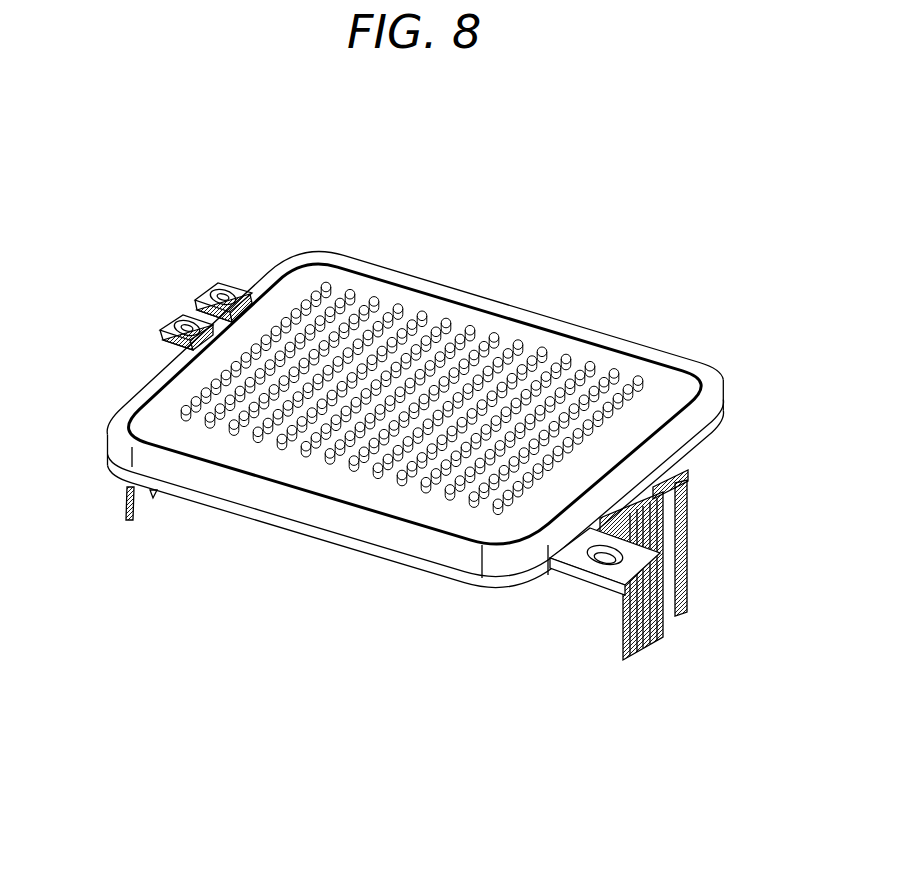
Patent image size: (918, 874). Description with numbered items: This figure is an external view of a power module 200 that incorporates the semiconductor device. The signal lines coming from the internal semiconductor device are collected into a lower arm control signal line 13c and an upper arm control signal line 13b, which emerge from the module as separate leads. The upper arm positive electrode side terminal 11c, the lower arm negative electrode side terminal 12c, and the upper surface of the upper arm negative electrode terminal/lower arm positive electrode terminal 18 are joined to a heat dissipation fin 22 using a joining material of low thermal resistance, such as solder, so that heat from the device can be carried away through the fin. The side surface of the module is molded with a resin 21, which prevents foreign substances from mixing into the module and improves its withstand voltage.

The power module 200 is at (502, 228).
The heat dissipation fin 22 is at (643, 356).
The resin 21 is at (415, 425).
The lower arm control signal line 13c is at (140, 373).
The lower arm negative electrode side terminal 12c is at (161, 267).
The upper arm positive electrode side terminal 11c is at (135, 312).
The upper arm control signal line 13b is at (692, 551).
The upper arm negative electrode terminal/lower arm positive electrode terminal 18 is at (585, 633).